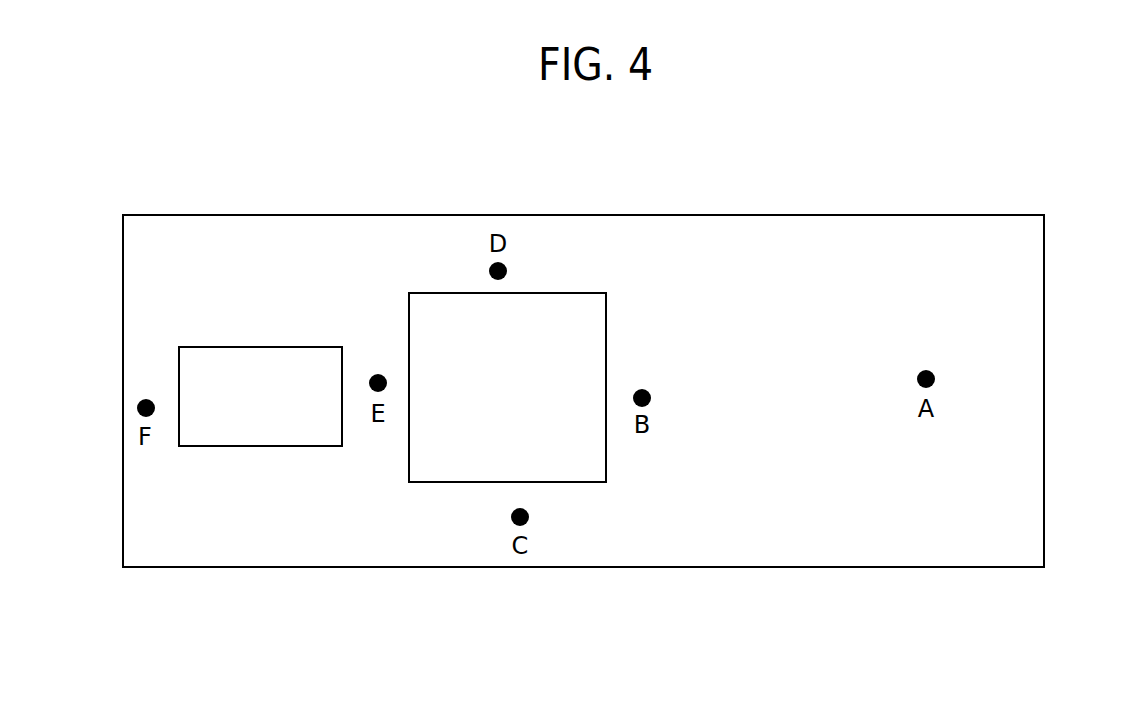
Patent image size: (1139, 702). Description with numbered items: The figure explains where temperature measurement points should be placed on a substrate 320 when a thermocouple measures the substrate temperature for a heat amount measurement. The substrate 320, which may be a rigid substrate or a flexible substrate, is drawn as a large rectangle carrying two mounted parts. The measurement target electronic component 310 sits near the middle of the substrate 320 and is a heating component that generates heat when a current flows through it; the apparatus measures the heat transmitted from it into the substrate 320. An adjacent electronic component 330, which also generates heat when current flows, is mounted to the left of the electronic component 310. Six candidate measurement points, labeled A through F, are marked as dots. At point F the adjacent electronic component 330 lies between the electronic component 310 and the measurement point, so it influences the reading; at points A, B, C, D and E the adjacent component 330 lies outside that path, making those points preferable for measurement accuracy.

The electronic component 310 is at (606, 322).
The substrate 320 is at (1044, 378).
The electronic component 330 is at (263, 347).